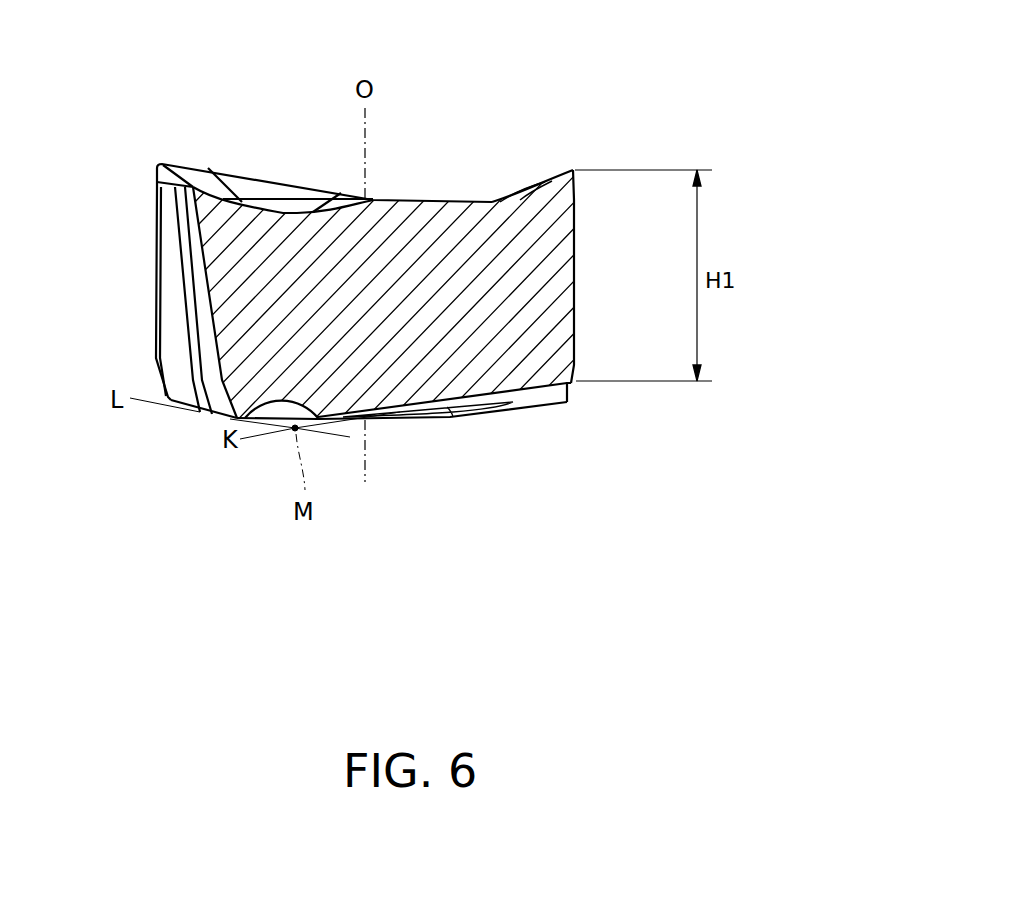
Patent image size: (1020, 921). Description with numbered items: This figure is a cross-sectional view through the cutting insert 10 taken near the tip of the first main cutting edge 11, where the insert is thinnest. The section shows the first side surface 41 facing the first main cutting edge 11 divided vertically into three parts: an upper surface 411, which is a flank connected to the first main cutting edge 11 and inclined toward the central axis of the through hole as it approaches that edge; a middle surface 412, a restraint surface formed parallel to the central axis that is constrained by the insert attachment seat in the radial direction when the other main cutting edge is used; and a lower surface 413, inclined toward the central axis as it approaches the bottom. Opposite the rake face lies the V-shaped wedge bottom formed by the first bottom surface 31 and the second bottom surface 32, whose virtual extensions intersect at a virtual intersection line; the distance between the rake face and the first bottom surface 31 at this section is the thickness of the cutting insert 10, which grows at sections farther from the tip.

The cutting insert 10 is at (393, 561).
The first main cutting edge 11 is at (571, 172).
The first bottom surface 31 is at (547, 398).
The second bottom surface 32 is at (230, 420).
The first side surface 41 is at (575, 238).
The upper surface (flank) 411 is at (568, 194).
The middle surface (restraint surface) 412 is at (575, 297).
The lower surface 413 is at (575, 375).